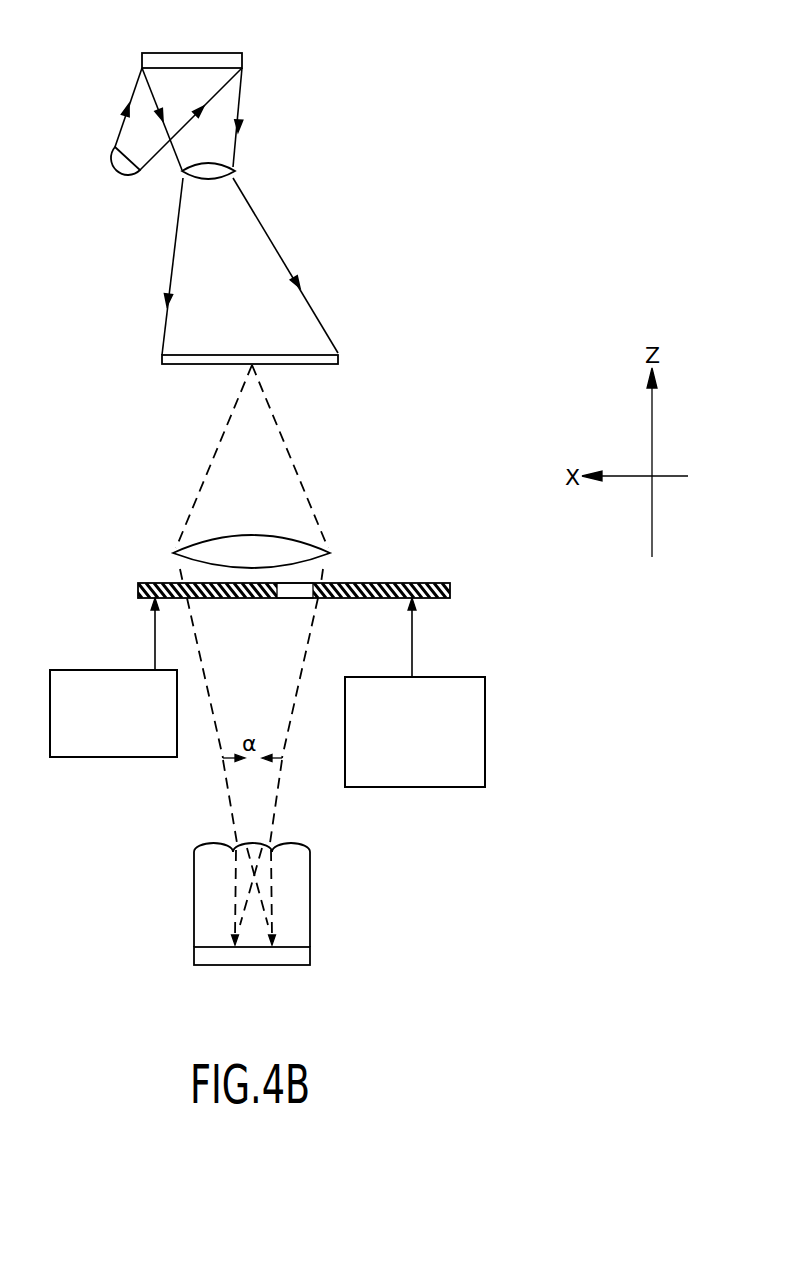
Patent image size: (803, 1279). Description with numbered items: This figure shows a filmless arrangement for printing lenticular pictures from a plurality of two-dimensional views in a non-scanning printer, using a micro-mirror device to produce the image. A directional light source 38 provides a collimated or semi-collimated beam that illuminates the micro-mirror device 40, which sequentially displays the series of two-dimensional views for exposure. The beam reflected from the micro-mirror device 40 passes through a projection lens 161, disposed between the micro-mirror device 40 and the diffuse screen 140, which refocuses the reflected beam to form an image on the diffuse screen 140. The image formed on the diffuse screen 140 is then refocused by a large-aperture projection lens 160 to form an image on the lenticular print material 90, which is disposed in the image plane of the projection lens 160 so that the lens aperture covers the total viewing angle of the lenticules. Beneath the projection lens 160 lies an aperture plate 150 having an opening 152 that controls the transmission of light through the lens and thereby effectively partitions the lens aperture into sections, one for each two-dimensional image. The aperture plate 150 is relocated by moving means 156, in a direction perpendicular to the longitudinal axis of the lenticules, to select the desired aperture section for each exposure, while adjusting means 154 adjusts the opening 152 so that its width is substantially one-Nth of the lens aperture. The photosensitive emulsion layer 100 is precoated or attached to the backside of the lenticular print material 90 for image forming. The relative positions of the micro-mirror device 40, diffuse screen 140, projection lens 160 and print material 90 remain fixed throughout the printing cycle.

The directional light source 38 is at (110, 173).
The micro-mirror device 40 is at (232, 53).
The projection lens 161 is at (233, 170).
The diffuse screen 140 is at (325, 364).
The projection lens 160 is at (310, 547).
The aperture plate 150 is at (430, 583).
The opening 152 is at (302, 598).
The adjusting means 154 is at (470, 787).
The moving means 156 is at (145, 757).
The lenticular print material 90 is at (302, 846).
The photosensitive emulsion layer 100 is at (310, 956).